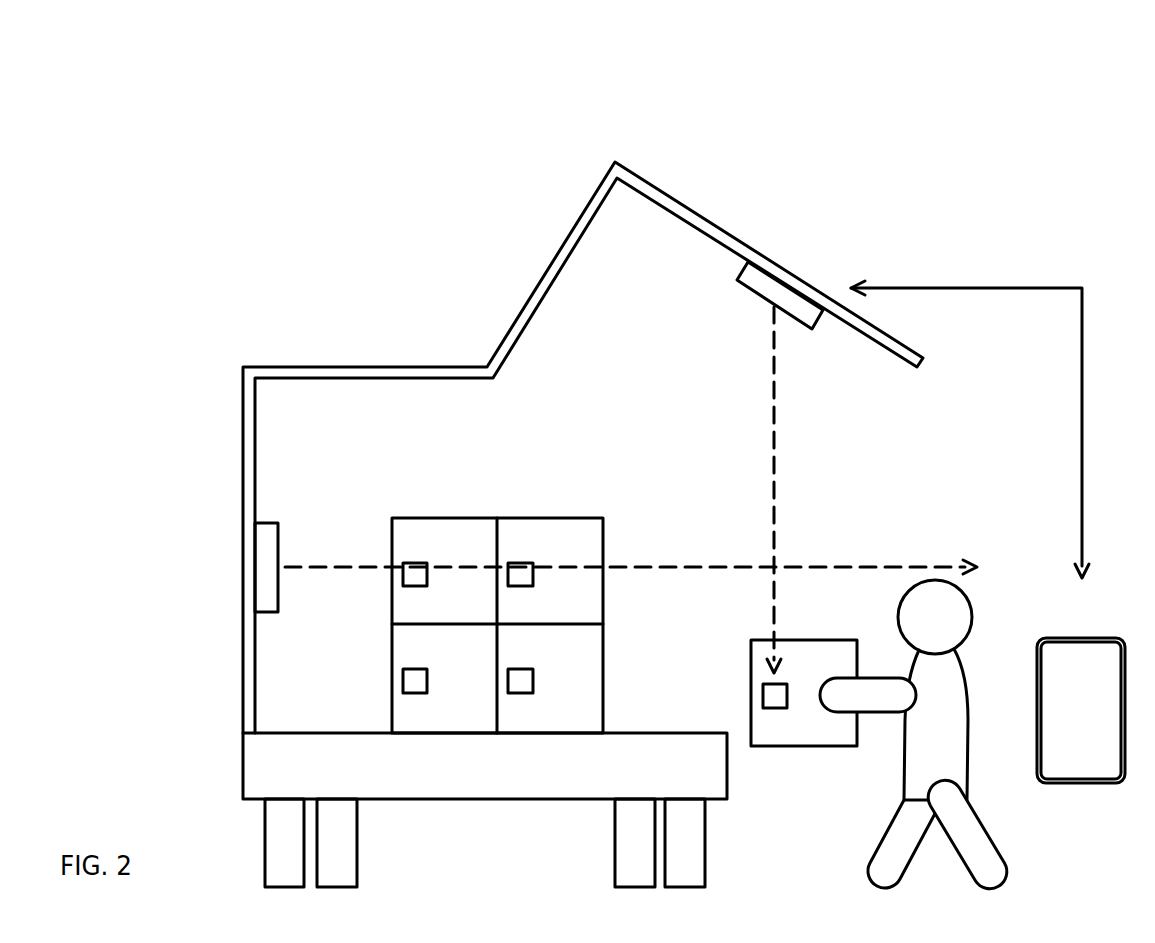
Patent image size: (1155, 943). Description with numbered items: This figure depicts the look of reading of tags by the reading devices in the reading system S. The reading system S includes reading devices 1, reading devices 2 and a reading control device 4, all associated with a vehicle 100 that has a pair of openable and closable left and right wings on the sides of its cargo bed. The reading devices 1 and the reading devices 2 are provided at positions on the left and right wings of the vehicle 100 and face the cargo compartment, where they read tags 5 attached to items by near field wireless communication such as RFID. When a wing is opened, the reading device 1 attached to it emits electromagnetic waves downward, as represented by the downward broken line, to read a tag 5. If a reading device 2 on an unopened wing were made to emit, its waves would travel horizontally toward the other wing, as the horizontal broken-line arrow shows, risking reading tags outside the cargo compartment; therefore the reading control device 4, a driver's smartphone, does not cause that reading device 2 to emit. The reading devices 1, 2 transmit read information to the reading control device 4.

The reading system S is at (568, 80).
The vehicle 100 is at (390, 367).
The reading device 1 is at (744, 268).
The reading device 2 is at (275, 523).
The reading control device 4 is at (1098, 637).
The tag 5 is at (788, 685).